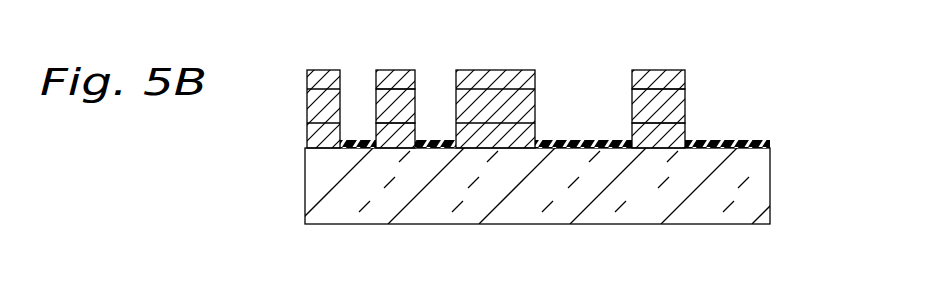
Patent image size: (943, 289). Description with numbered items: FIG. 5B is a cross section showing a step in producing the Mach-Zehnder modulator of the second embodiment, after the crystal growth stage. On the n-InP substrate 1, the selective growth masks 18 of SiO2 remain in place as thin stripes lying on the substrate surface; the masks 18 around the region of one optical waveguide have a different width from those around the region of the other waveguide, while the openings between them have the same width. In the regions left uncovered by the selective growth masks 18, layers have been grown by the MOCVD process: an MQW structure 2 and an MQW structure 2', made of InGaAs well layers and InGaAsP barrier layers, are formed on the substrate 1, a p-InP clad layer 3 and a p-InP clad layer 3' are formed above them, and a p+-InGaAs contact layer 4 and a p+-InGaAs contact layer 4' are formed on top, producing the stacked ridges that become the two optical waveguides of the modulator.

The n-InP substrate 1 is at (750, 193).
The MQW structure 2 is at (402, 213).
The MQW structure 2' is at (661, 216).
The p-InP clad layer 3 is at (382, 74).
The p-InP clad layer 3' is at (686, 100).
The p+-InGaAs contact layer 4 is at (404, 58).
The p+-InGaAs contact layer 4' is at (672, 57).
The selective growth mask 18 is at (355, 140).